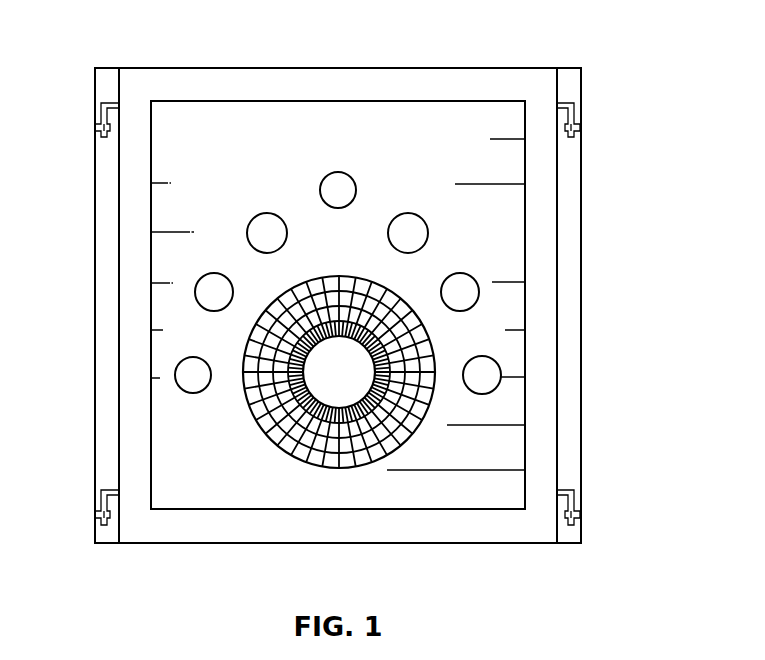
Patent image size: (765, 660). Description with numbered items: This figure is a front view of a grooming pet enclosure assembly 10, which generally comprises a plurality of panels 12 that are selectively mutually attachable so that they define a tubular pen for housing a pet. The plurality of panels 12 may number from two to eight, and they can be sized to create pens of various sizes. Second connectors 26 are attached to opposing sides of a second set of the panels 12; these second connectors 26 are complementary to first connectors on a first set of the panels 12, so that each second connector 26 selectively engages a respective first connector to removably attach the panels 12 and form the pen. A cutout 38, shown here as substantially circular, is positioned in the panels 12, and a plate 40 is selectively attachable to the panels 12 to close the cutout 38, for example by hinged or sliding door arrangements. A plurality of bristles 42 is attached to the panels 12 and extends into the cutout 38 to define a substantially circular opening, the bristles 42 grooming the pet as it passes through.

The grooming pet enclosure assembly 10 is at (84, 38).
The panel 12 is at (185, 201).
The second connector 26 is at (580, 126).
The cutout 38 is at (437, 391).
The plate 40 is at (341, 372).
The bristles 42 is at (264, 382).